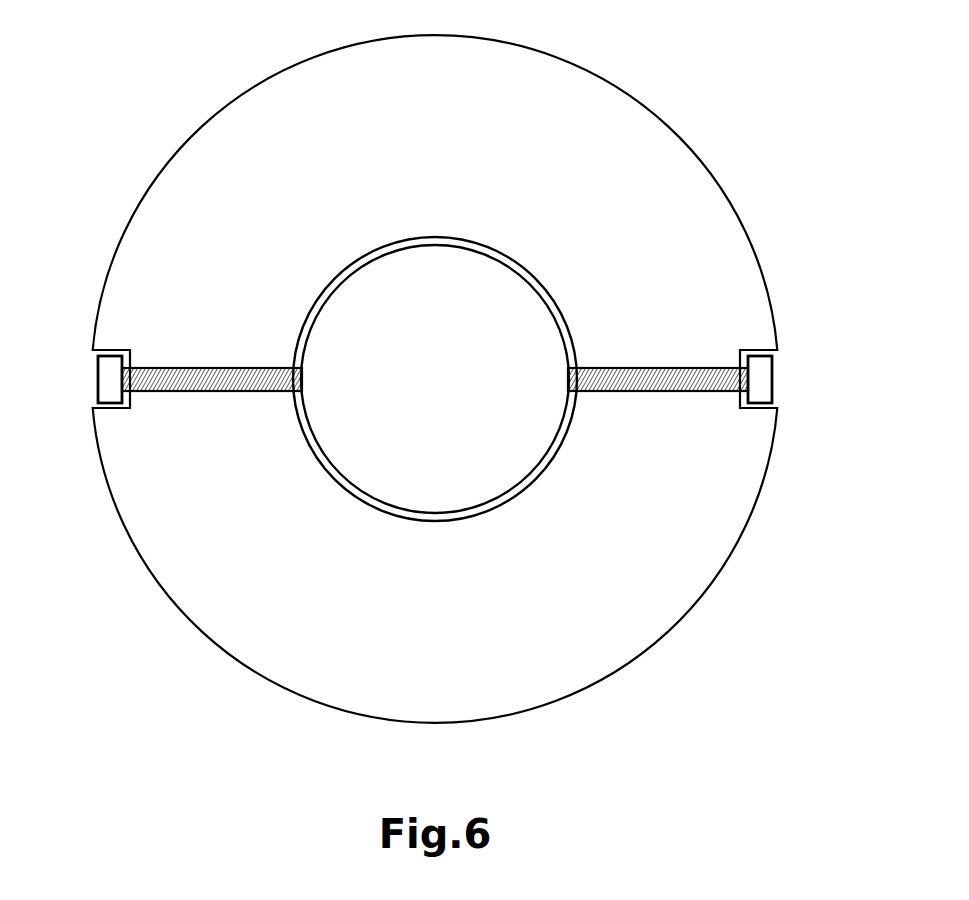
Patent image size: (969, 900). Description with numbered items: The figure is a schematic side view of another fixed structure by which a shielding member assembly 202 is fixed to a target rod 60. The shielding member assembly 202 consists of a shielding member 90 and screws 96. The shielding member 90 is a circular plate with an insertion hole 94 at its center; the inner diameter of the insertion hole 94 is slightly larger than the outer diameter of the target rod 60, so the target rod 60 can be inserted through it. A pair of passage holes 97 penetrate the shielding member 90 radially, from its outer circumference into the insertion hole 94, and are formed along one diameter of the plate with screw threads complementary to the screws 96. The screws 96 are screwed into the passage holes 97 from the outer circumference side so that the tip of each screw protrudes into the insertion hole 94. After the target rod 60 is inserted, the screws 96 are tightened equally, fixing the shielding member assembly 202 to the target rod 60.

The shielding member assembly 202 is at (166, 78).
The shielding member 90 is at (646, 111).
The insertion hole 94 is at (338, 480).
The target rod 60 is at (437, 238).
The passage holes 97 is at (203, 383).
The screws 96 is at (98, 379).